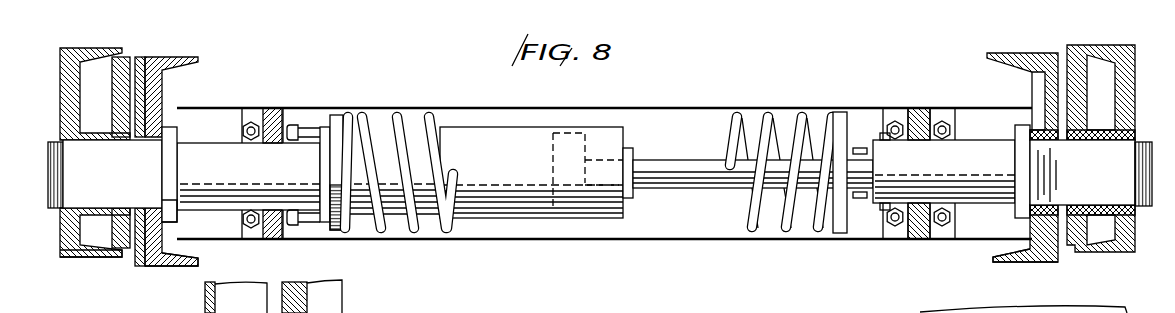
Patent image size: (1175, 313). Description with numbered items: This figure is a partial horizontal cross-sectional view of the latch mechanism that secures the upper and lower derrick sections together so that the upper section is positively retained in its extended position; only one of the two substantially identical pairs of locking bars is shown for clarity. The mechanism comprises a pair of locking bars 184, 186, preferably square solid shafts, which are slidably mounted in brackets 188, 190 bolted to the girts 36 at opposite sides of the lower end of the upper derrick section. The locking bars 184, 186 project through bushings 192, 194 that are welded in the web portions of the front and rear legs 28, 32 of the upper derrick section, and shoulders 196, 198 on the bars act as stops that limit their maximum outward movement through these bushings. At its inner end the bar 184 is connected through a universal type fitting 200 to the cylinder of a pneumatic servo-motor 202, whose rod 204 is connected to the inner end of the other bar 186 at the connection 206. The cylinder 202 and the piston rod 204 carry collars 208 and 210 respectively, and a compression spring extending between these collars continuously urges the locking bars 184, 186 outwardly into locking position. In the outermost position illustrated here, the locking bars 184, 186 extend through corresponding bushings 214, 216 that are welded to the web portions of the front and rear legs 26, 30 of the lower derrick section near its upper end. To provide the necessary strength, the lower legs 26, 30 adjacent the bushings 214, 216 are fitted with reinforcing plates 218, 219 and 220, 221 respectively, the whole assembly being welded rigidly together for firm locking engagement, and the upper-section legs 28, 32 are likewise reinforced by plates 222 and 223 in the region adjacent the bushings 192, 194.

The front leg of the lower derrick section 26 is at (72, 258).
The front leg of the upper derrick section 28 is at (145, 264).
The rear leg of the lower derrick section 30 is at (1088, 44).
The rear leg of the upper derrick section 32 is at (1033, 264).
The girts 36 is at (528, 231).
The locking bar 184 is at (53, 157).
The locking bar 186 is at (1060, 170).
The bracket 188 is at (266, 239).
The bracket 190 is at (912, 228).
The bushing 192 is at (166, 109).
The bushing 194 is at (1017, 133).
The shoulder 196 is at (191, 175).
The shoulder 198 is at (1027, 156).
The universal type fitting 200 is at (303, 124).
The cylinder of pneumatic servo-motor 202 is at (474, 133).
The piston rod 204 is at (660, 166).
The connection of rod to bar 206 is at (856, 147).
The collar 208 is at (337, 122).
The collar 210 is at (840, 111).
The bushing 214 is at (62, 210).
The bushing 216 is at (1086, 141).
The reinforcing plate 218 is at (70, 80).
The reinforcing plate 219 is at (132, 58).
The reinforcing plate 220 is at (1123, 207).
The reinforcing plate 221 is at (1033, 78).
The reinforcing plate 222 is at (163, 238).
The reinforcing plate 223 is at (1033, 231).